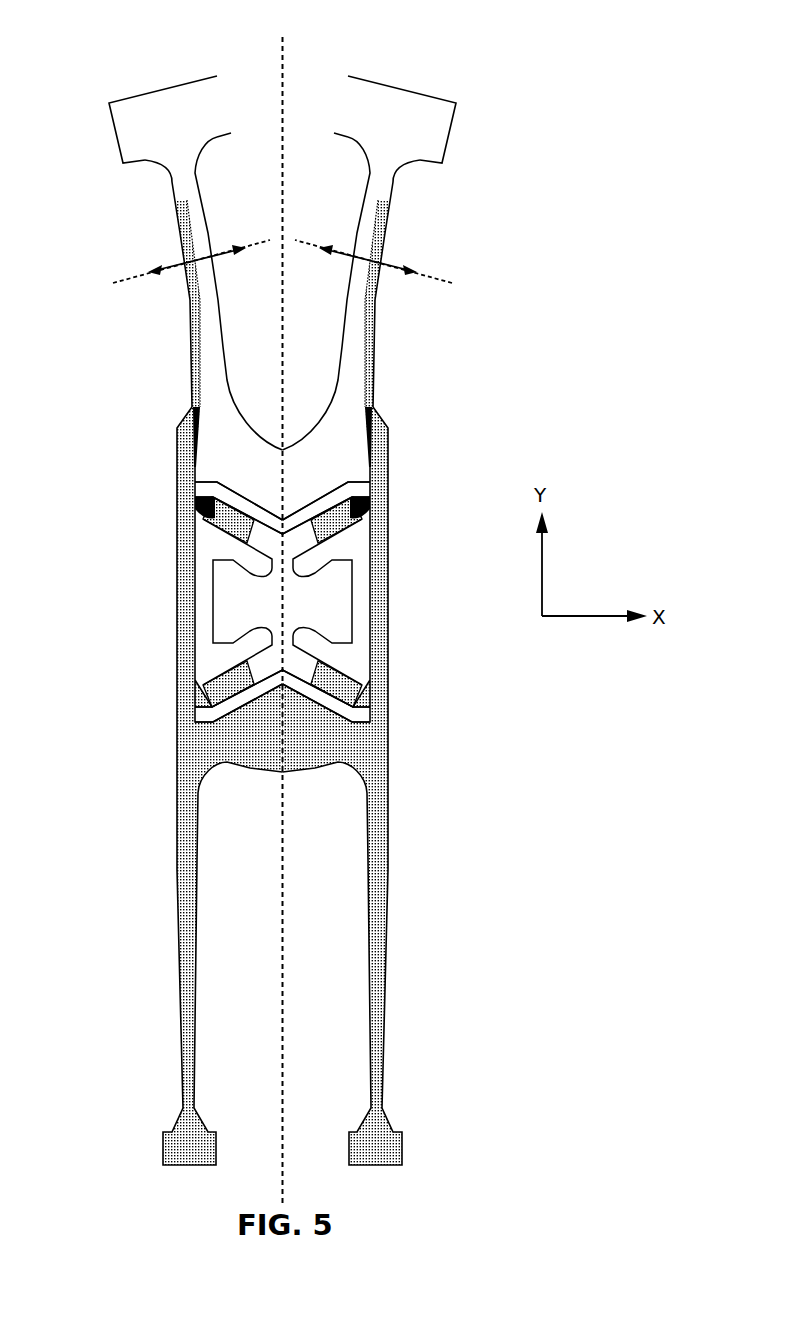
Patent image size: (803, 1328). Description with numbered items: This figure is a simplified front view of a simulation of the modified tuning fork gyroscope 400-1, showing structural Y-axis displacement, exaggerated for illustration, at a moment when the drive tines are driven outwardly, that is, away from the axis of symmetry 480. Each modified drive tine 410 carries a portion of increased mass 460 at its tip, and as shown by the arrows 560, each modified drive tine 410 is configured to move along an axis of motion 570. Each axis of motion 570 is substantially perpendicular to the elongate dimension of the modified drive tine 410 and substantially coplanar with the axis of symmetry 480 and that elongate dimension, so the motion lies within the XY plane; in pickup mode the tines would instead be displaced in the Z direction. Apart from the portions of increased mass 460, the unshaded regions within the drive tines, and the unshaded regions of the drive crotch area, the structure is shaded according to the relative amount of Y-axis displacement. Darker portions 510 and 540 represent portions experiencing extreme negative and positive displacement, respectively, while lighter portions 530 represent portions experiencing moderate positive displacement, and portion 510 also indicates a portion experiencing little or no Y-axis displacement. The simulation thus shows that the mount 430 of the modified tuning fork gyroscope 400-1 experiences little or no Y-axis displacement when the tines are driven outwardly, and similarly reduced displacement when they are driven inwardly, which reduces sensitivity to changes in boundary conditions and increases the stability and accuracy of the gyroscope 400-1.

The modified tuning fork gyroscope 400-1 is at (548, 967).
The modified drive tine 410 is at (183, 233).
The mount 430 is at (257, 611).
The portion of increased mass 460 is at (158, 108).
The axis of symmetry 480 is at (282, 52).
The darker portion 510 is at (340, 632).
The lighter portion 530 is at (287, 740).
The darker portion 540 is at (370, 468).
The arrows 560 is at (352, 247).
The axis of motion 570 is at (452, 283).